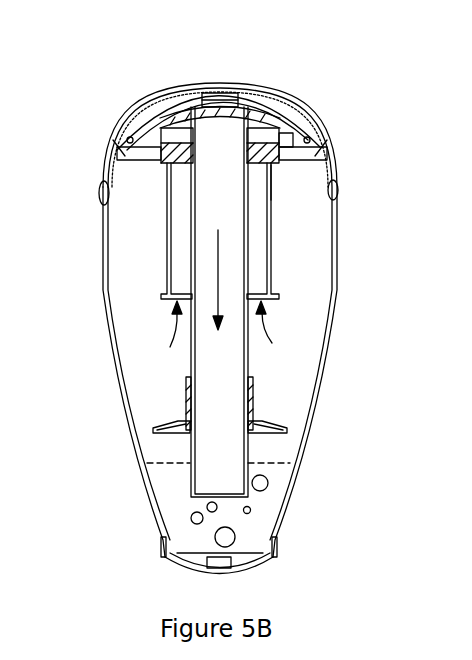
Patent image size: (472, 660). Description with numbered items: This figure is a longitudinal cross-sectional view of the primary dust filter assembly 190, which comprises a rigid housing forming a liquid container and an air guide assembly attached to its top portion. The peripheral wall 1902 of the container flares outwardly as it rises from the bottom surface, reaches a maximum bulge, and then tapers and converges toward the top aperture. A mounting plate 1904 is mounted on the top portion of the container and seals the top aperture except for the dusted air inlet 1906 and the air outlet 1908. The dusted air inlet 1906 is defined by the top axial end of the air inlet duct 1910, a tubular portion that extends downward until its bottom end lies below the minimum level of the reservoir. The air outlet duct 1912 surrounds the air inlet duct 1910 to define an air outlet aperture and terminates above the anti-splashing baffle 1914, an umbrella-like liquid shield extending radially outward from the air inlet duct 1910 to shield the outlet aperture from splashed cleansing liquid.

The primary dust filter assembly 190 is at (374, 354).
The peripheral wall 1902 is at (330, 287).
The mounting plate 1904 is at (297, 147).
The dusted air inlet 1906 is at (218, 124).
The air outlet 1908 is at (255, 252).
The air inlet duct 1910 is at (247, 367).
The air outlet duct 1912 is at (270, 195).
The anti-splashing baffle 1914 is at (177, 422).